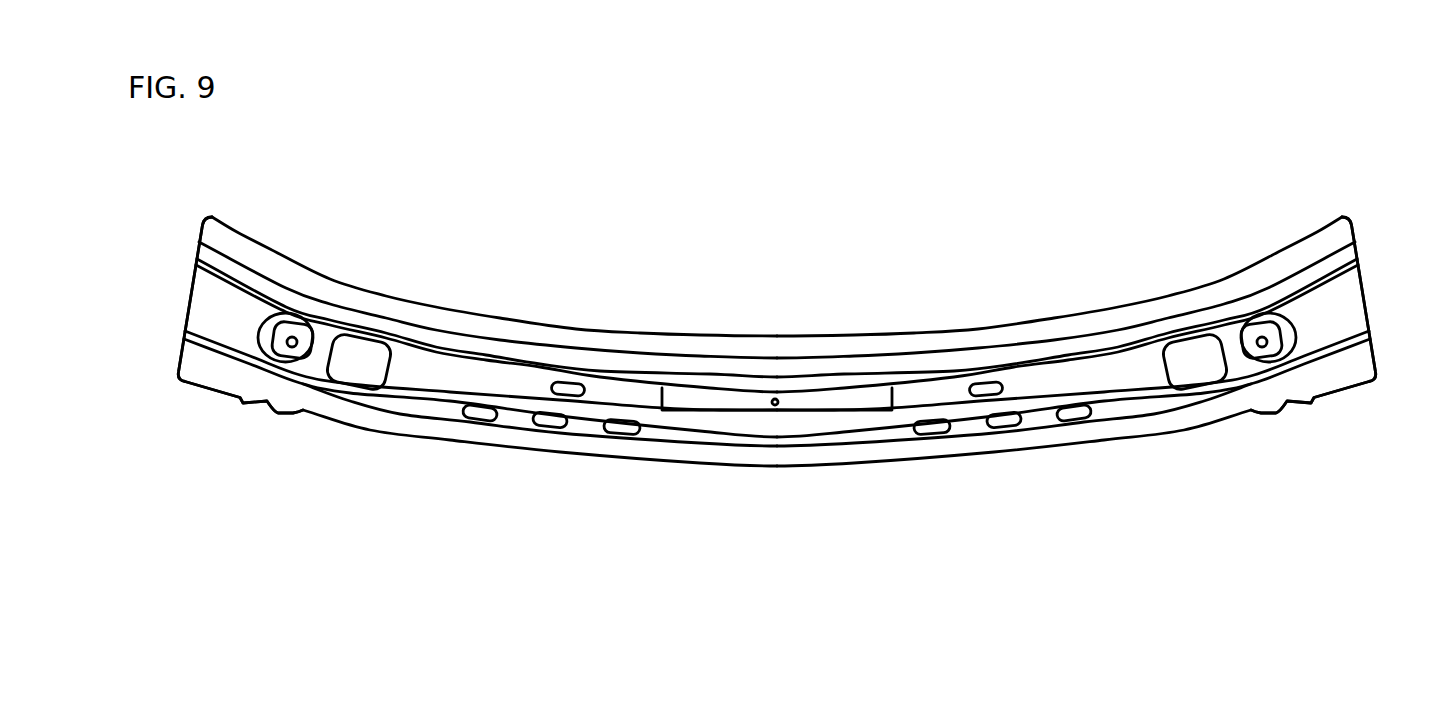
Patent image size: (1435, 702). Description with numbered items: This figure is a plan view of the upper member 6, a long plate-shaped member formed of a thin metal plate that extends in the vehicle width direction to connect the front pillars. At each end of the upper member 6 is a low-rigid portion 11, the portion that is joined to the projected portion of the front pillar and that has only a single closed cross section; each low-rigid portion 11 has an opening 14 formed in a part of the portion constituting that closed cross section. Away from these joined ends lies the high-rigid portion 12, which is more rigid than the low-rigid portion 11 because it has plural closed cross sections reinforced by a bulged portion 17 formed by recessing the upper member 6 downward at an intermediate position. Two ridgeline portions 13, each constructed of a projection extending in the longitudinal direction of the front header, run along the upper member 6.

The upper member 6 is at (1360, 153).
The low-rigid portion 11 is at (411, 263).
The high-rigid portion 12 is at (1082, 296).
The ridgeline portions 13 is at (220, 348).
The opening 14 is at (355, 362).
The bulged portion 17 is at (833, 400).